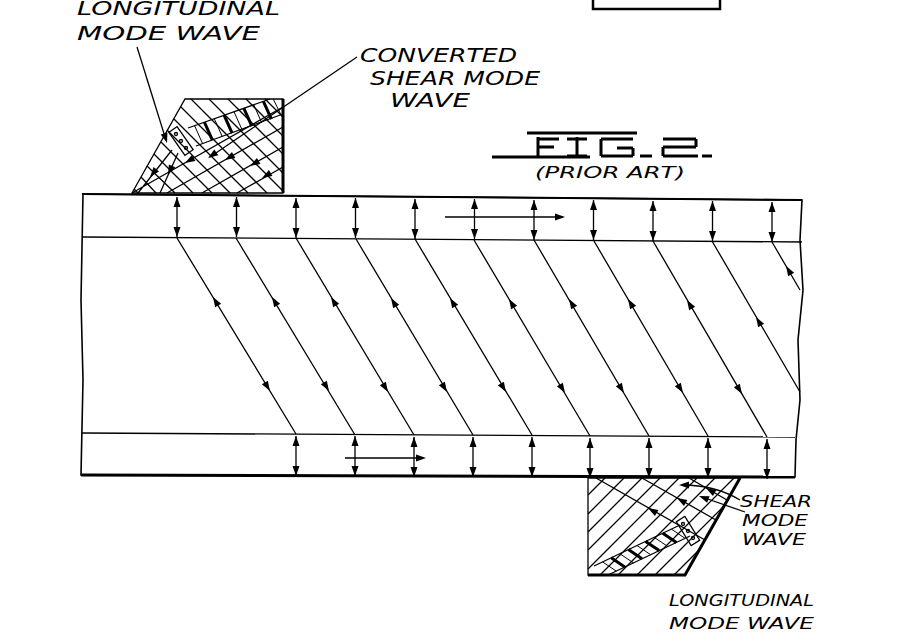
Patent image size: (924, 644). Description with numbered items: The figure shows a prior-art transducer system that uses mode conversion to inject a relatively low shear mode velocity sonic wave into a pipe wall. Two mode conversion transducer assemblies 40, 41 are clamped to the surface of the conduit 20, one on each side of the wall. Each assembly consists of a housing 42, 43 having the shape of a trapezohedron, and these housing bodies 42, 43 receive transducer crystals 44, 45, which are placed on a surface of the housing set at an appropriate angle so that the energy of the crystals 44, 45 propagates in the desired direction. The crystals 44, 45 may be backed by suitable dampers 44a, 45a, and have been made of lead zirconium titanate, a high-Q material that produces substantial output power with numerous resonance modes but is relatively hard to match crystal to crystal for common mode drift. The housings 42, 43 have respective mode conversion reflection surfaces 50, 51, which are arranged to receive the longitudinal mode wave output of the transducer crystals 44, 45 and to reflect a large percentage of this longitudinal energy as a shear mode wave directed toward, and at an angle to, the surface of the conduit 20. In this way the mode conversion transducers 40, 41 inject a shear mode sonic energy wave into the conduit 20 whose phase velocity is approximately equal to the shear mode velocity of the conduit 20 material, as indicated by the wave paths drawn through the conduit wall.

The conduit 20 is at (440, 195).
The mode conversion transducer assembly 40 is at (224, 126).
The mode conversion transducer assembly 41 is at (622, 545).
The housing 42 is at (270, 177).
The housing 43 is at (588, 538).
The transducer crystal 44 is at (217, 80).
The damper 44a is at (249, 110).
The transducer crystal 45 is at (661, 575).
The damper 45a is at (617, 576).
The mode conversion reflection surface 50 is at (158, 147).
The mode conversion reflection surface 51 is at (704, 543).